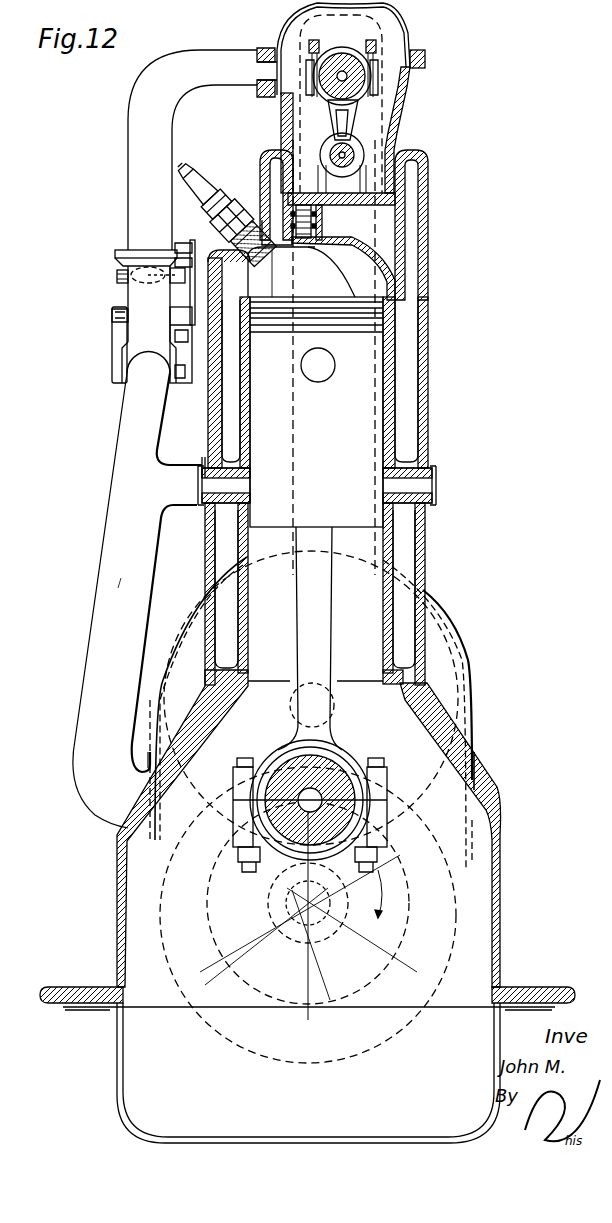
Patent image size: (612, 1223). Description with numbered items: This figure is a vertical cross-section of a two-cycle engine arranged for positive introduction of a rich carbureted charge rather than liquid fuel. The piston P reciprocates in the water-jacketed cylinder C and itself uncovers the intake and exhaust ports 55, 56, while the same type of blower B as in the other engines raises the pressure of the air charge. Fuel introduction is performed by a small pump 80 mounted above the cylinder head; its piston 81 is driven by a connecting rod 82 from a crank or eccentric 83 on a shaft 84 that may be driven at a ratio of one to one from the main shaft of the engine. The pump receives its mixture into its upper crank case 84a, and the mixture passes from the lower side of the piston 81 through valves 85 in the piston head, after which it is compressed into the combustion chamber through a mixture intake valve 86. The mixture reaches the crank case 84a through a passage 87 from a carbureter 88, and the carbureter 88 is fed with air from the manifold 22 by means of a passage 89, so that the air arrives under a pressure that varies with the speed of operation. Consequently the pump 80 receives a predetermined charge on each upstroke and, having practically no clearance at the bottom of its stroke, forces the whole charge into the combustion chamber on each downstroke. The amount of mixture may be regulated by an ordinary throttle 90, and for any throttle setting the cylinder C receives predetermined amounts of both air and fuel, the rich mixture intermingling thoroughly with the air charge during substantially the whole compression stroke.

The manifold 22 is at (113, 590).
The intake port 55 is at (224, 485).
The exhaust port 56 is at (409, 485).
The small pump 80 is at (403, 130).
The piston 81 is at (382, 153).
The connecting rod 82 is at (350, 118).
The crank or eccentric 83 is at (368, 58).
The shaft 84 is at (338, 45).
The upper crank case 84a is at (293, 30).
The valves 85 is at (330, 207).
The mixture intake valve 86 is at (328, 265).
The passage 87 is at (192, 150).
The carbureter 88 is at (113, 330).
The passage 89 is at (132, 427).
The throttle 90 is at (135, 282).
The blower B is at (360, 727).
The cylinder C is at (396, 394).
The piston P is at (310, 506).